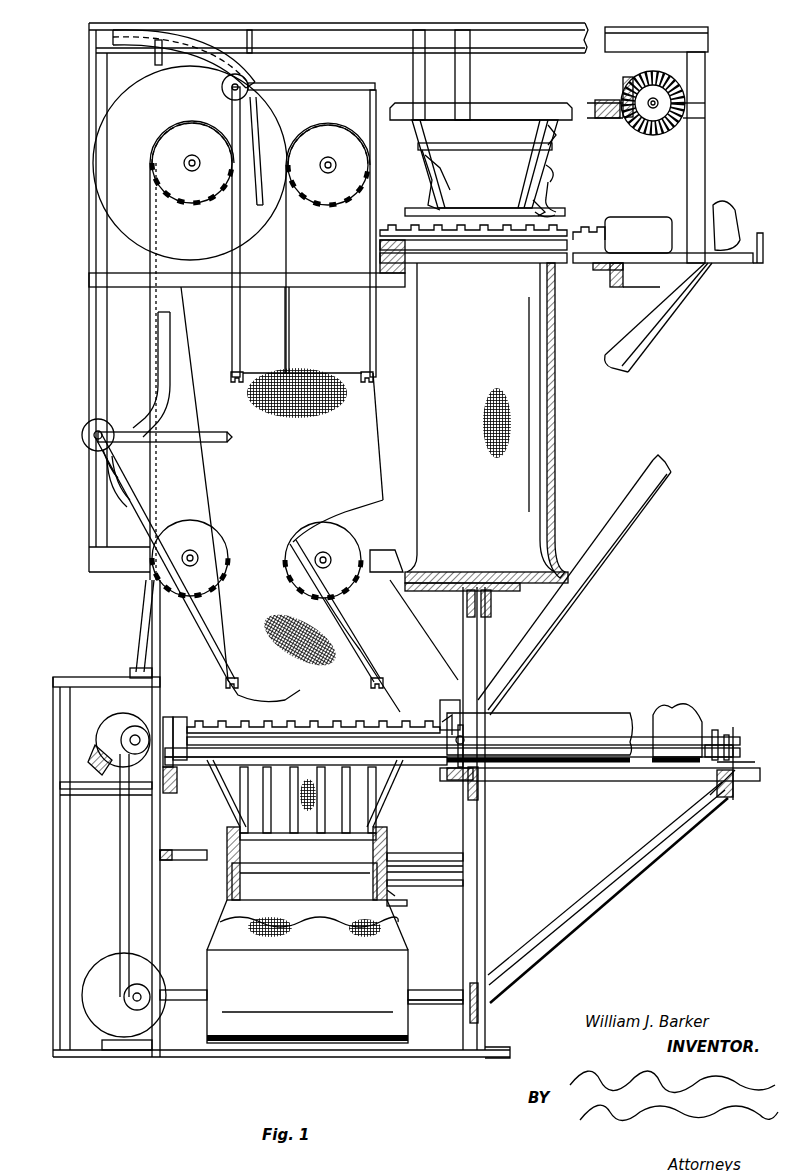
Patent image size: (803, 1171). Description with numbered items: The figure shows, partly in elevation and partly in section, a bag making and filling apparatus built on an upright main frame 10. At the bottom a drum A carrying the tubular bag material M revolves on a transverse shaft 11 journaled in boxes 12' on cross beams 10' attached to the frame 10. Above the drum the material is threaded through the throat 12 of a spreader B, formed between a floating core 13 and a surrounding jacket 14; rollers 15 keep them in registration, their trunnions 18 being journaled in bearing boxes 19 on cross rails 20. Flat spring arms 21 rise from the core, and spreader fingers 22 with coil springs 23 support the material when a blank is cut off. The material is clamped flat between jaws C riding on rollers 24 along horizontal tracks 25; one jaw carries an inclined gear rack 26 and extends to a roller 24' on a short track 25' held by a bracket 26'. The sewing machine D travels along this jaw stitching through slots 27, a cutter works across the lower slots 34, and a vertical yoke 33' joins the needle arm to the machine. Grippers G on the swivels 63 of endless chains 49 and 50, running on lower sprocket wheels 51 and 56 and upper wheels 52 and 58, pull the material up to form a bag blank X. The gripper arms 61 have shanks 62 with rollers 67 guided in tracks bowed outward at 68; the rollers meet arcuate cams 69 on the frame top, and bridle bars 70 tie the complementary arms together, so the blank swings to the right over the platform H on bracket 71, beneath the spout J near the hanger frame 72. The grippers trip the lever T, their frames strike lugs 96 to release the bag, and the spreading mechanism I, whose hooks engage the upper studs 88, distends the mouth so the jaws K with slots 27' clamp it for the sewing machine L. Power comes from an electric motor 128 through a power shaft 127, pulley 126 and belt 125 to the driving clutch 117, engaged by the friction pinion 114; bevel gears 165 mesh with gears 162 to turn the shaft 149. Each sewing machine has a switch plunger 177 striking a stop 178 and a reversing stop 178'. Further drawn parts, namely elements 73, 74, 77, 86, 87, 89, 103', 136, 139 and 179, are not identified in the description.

The main frame 10 is at (496, 818).
The cross beams 10' is at (506, 1035).
The transverse shaft 11 is at (415, 990).
The throat 12 is at (311, 925).
The boxes 12' is at (443, 1009).
The floating core 13 is at (310, 893).
The jacket 14 is at (395, 890).
The rollers 15 is at (405, 853).
The trunnions 18 is at (472, 840).
The bearing boxes 19 is at (472, 853).
The cross rails 20 is at (482, 877).
The spring arms 21 is at (378, 805).
The spreader fingers 22 is at (225, 790).
The coil springs 23 is at (245, 840).
The rollers 24 is at (496, 788).
The roller 24' is at (735, 800).
The horizontal tracks 25 is at (318, 783).
The short track 25' is at (746, 783).
The gear rack 26 is at (313, 712).
The bracket 26' is at (554, 614).
The longitudinal slots 27 is at (463, 718).
The slots 27' is at (473, 273).
The vertical yoke 33' is at (677, 710).
The longitudinal slots 34 is at (278, 720).
The endless sprocket chains 49 is at (145, 340).
The endless sprocket chains 50 is at (290, 310).
The sprocket wheels 51 is at (210, 545).
The sprocket wheels 52 is at (163, 133).
The sprocket wheels 56 is at (348, 590).
The sprocket wheels 58 is at (330, 205).
The gripper arms 61 is at (235, 238).
The shanks 62 is at (230, 105).
The swivels 63 is at (222, 176).
The rollers 67 is at (222, 85).
The bowed track portion 68 is at (105, 480).
The arcuate cams 69 is at (198, 30).
The bridle bars 70 is at (343, 84).
The bracket 71 is at (491, 605).
The hanger frame 72 is at (510, 103).
The bar 73 is at (262, 84).
The arm 74 is at (258, 125).
The bracket 77 is at (252, 30).
The lug 86 is at (555, 135).
The lever 87 is at (545, 210).
The upper studs 88 is at (555, 170).
The lever 89 is at (552, 182).
The lugs 96 is at (475, 142).
The bolt 103' is at (489, 746).
The friction pinion 114 is at (100, 750).
The driving clutch 117 is at (100, 734).
The endless belt 125 is at (120, 898).
The pulley 126 is at (130, 995).
The power shaft 127 is at (125, 1040).
The electric motor 128 is at (105, 1012).
The pipe 136 is at (138, 637).
The drum 139 is at (100, 157).
The shaft 149 is at (662, 104).
The gears 162 is at (685, 82).
The bevel gears 165 is at (632, 80).
The switch plunger 177 is at (445, 725).
The stop 178 is at (186, 724).
The stop 178' is at (682, 788).
The latch 179 is at (716, 730).
The drum A is at (400, 1050).
The spreader B is at (392, 896).
The jaws C is at (427, 715).
The sewing machine D is at (560, 713).
The grippers G is at (242, 375).
The platform H is at (575, 590).
The spreading mechanism I is at (545, 216).
The spout J is at (497, 200).
The jaws K is at (458, 262).
The sewing machine L is at (645, 230).
The bag material M is at (400, 930).
The tripping mechanism T is at (447, 170).
The bag blank X is at (350, 455).